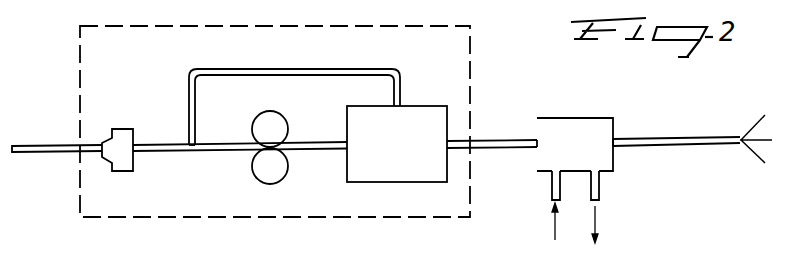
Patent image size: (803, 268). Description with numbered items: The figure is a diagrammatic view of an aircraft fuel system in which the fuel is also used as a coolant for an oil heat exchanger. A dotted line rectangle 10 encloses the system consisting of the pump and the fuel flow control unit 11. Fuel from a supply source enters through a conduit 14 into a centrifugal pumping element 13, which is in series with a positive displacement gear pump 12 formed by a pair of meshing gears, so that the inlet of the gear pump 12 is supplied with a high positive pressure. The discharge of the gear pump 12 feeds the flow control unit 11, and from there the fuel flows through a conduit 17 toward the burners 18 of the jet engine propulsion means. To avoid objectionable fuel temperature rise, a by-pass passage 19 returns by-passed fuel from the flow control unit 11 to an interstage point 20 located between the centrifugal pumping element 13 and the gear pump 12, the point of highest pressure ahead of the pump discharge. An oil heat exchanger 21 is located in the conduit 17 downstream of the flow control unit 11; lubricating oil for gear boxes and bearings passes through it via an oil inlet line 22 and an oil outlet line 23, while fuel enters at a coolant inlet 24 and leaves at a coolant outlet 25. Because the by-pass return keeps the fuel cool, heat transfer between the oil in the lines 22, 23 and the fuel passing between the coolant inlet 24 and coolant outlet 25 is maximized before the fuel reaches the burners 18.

The dotted line rectangle 10 is at (80, 95).
The fuel flow control unit 11 is at (447, 170).
The positive displacement gear pump 12 is at (273, 130).
The centrifugal pumping element 13 is at (122, 145).
The conduit 14 is at (38, 152).
The conduit 17 is at (488, 140).
The burners 18 is at (742, 133).
The by-pass passage 19 is at (302, 70).
The interstage point 20 is at (196, 142).
The oil heat exchanger 21 is at (580, 117).
The oil inlet line 22 is at (550, 192).
The oil outlet line 23 is at (600, 187).
The coolant inlet 24 is at (535, 139).
The coolant outlet 25 is at (615, 137).